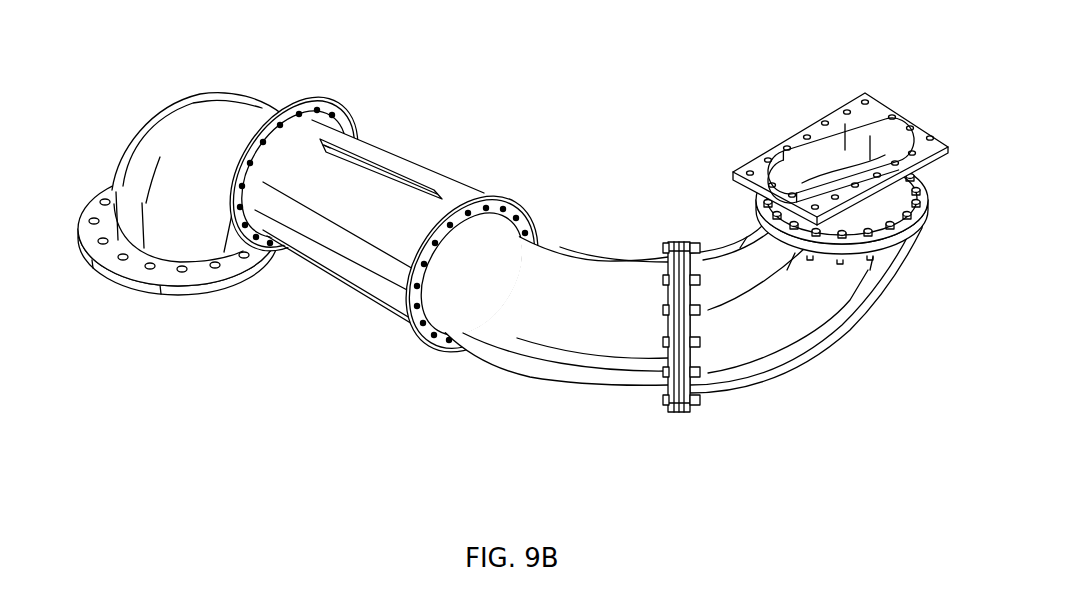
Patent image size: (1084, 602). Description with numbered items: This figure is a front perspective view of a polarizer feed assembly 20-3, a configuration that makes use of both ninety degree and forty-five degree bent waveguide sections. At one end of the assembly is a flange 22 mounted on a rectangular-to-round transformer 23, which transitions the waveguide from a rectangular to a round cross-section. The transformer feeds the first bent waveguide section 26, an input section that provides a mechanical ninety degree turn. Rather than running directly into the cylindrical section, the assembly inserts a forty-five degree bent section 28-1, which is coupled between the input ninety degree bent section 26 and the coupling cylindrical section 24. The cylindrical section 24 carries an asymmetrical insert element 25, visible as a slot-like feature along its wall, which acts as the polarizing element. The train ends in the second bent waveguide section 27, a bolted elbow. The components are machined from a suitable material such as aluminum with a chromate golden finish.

The feed assembly 20-3 is at (616, 141).
The flange 22 is at (900, 123).
The rectangular-to-round transformer 23 is at (903, 214).
The coupling cylindrical section 24 is at (321, 256).
The asymmetrical insert element 25 is at (390, 161).
The first bent waveguide section 26 is at (803, 325).
The second bent waveguide section 27 is at (188, 142).
The 45° bent section 28-1 is at (573, 359).